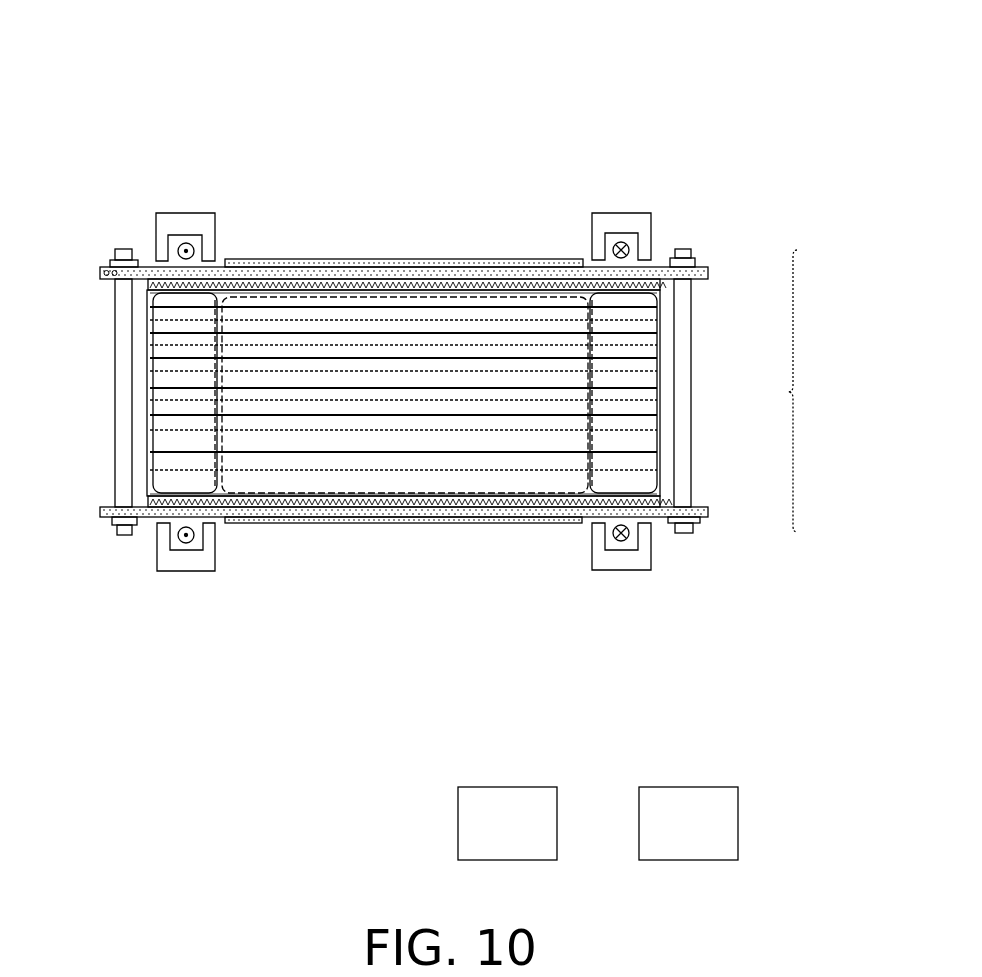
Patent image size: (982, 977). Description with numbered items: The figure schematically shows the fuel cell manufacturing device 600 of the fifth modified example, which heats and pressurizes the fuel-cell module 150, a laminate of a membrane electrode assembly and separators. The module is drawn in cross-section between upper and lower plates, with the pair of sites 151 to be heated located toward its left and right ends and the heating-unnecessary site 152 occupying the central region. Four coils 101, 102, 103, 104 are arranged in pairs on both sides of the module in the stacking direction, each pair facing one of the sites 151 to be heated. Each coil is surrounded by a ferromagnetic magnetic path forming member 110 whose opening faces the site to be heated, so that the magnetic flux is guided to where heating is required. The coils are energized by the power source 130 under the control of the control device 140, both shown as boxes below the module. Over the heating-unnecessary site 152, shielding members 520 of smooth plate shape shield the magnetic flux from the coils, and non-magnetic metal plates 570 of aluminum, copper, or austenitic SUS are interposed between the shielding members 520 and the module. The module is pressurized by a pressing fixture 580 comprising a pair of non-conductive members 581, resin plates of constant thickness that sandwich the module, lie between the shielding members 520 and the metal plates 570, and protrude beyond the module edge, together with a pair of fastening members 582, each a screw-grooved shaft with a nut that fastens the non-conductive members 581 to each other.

The fuel cell manufacturing device 600 is at (58, 35).
The coil 101 is at (172, 245).
The coil 102 is at (180, 540).
The coil 103 is at (630, 250).
The coil 104 is at (630, 540).
The magnetic path forming member 110 is at (190, 222).
The power source 130 is at (502, 800).
The control device 140 is at (690, 800).
The fuel-cell module 150 is at (146, 330).
The site to be heated 151 is at (153, 410).
The heating-unnecessary site 152 is at (446, 268).
The shielding member 520 is at (338, 262).
The non-magnetic metal plate 570 is at (148, 283).
The pressing fixture 580 is at (817, 391).
The non-conductive member 581 is at (100, 272).
The fastening member 582 is at (112, 432).